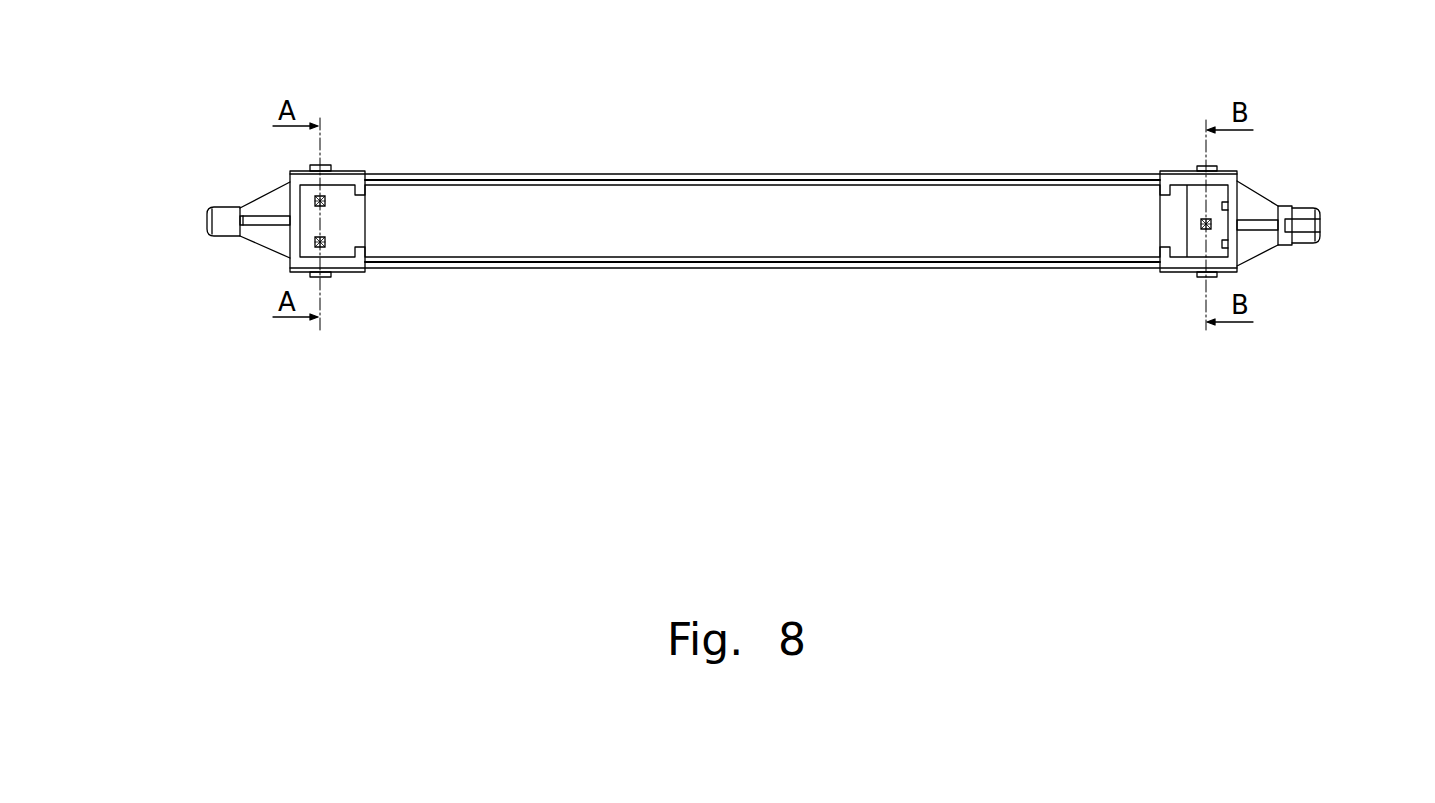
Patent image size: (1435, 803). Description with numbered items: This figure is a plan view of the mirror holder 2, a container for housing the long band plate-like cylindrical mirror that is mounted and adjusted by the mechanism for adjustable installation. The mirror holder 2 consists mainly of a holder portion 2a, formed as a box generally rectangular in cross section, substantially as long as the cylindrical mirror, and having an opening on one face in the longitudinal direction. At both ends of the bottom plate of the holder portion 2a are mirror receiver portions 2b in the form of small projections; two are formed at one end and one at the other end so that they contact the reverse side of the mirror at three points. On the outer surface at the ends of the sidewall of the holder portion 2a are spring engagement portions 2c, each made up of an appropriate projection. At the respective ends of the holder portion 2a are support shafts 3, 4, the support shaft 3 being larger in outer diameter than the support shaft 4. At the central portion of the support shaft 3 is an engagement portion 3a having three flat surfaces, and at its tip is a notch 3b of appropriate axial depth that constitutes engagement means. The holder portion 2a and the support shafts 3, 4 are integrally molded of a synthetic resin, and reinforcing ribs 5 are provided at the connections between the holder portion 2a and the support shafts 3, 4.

The mirror holder 2 is at (690, 205).
The holder portion 2a is at (793, 267).
The mirror receiver portions 2b is at (327, 192).
The spring engagement portions 2c is at (323, 163).
The support shaft 3 is at (1342, 235).
The engagement portion 3a is at (1292, 240).
The notch 3b is at (1310, 223).
The support shaft 4 is at (227, 227).
The reinforcing ribs 5 is at (273, 198).